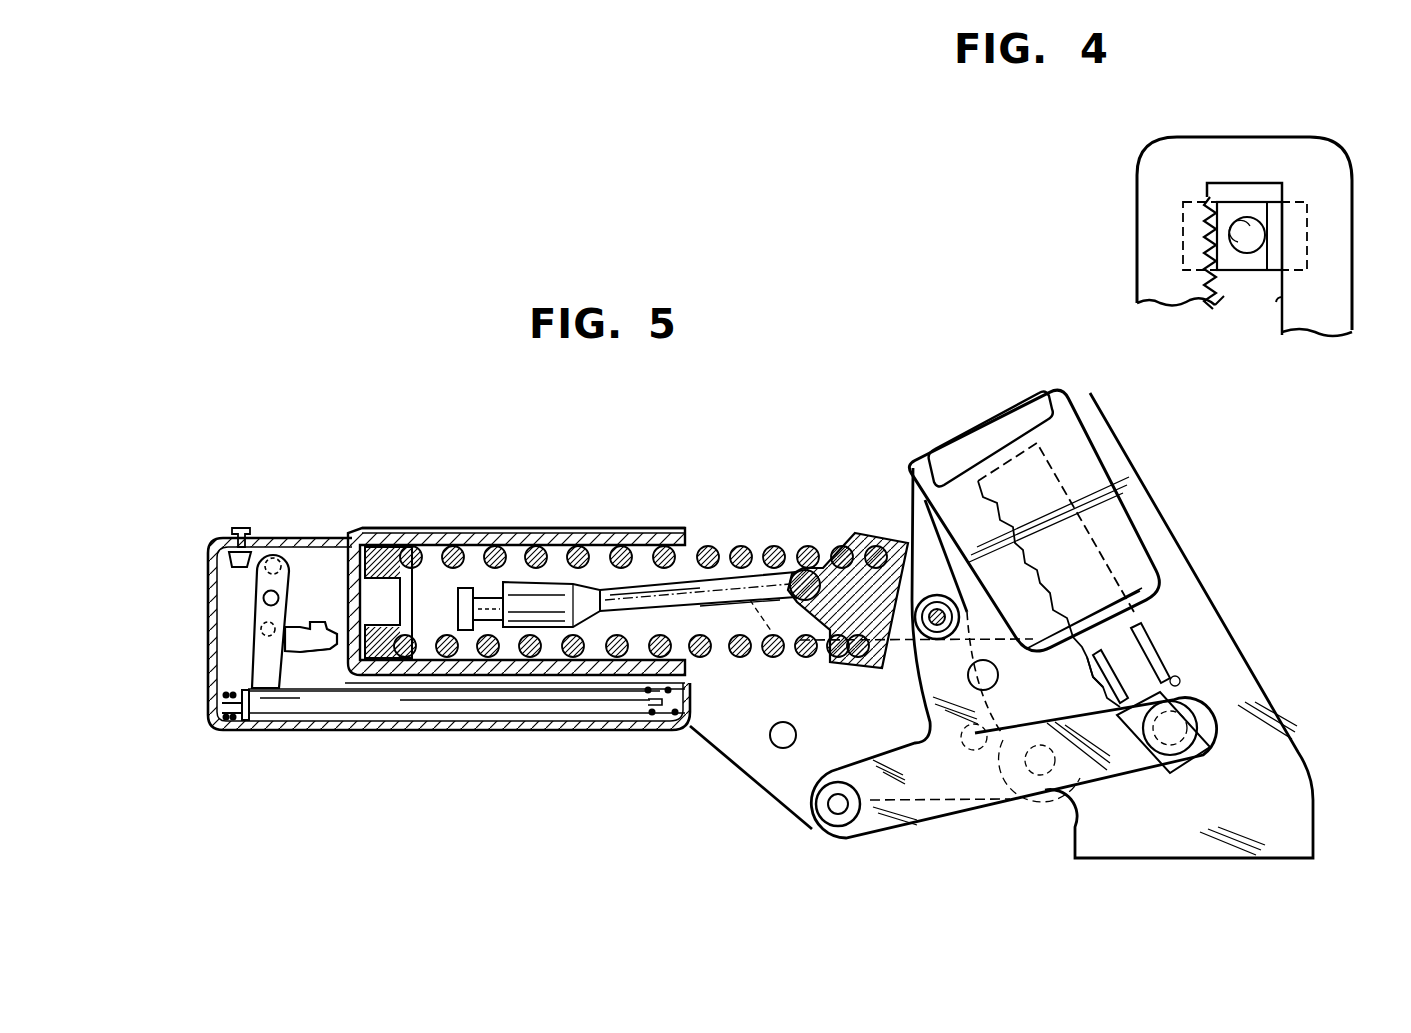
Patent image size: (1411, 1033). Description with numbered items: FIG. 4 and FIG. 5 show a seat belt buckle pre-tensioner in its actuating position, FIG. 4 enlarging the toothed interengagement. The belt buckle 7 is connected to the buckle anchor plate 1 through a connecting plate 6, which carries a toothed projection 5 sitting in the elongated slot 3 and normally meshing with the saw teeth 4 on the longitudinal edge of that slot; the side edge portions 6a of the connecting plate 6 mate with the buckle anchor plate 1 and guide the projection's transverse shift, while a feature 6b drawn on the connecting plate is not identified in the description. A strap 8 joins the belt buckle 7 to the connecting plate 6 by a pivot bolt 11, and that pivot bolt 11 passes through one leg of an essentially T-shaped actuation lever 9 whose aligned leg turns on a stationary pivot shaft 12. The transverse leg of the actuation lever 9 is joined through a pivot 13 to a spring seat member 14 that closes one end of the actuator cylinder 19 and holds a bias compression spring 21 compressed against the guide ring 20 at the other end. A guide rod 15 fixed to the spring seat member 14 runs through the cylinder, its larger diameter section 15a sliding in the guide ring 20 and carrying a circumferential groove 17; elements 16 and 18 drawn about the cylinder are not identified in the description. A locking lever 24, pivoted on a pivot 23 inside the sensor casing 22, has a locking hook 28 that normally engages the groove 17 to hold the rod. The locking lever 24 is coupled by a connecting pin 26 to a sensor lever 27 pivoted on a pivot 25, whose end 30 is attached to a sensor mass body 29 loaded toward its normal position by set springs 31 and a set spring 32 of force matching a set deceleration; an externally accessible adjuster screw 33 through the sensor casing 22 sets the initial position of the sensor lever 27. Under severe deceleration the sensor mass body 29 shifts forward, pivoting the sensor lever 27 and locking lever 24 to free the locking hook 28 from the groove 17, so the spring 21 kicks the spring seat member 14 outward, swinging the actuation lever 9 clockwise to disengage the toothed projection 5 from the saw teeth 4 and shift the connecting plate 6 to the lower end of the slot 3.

In FIG. 4, the buckle anchor plate 1 is at (1147, 238).
In FIG. 5, the buckle anchor plate 1 is at (1197, 637).
In FIG. 4, the elongated slot 3 is at (1347, 305).
In FIG. 5, the elongated slot 3 is at (1185, 683).
In FIG. 4, the saw teeth 4 is at (1220, 298).
In FIG. 5, the saw teeth 4 is at (1110, 567).
In FIG. 4, the toothed projection 5 is at (1208, 198).
In FIG. 4, the connecting plate 6 is at (1245, 268).
In FIG. 5, the connecting plate 6 is at (1034, 655).
In FIG. 4, the side edge portions 6a is at (1193, 247).
In FIG. 4, the hole 6b is at (1248, 228).
In FIG. 5, the belt buckle 7 is at (1100, 482).
In FIG. 5, the strap 8 is at (1130, 657).
In FIG. 5, the actuation lever 9 is at (962, 787).
In FIG. 5, the pivot bolt 11 is at (1173, 740).
In FIG. 5, the pivot shaft 12 is at (835, 807).
In FIG. 5, the pivot 13 is at (935, 620).
In FIG. 5, the spring seat member 14 is at (880, 545).
In FIG. 5, the guide rod 15 is at (707, 598).
In FIG. 5, the larger diameter section 15a is at (557, 582).
In FIG. 5, the spring seat 16 is at (812, 548).
In FIG. 5, the circumferential groove 17 is at (493, 607).
In FIG. 5, the spring housing 18 is at (456, 527).
In FIG. 5, the actuator cylinder 19 is at (636, 536).
In FIG. 5, the guide ring 20 is at (400, 603).
In FIG. 5, the bias compression spring 21 is at (770, 548).
In FIG. 5, the sensor casing 22 is at (580, 728).
In FIG. 5, the pivot 23 is at (262, 632).
In FIG. 5, the locking lever 24 is at (303, 645).
In FIG. 5, the pivot 25 is at (264, 598).
In FIG. 5, the connecting pin 26 is at (273, 558).
In FIG. 5, the sensor lever 27 is at (287, 593).
In FIG. 5, the locking hook 28 is at (322, 626).
In FIG. 5, the sensor mass body 29 is at (408, 712).
In FIG. 5, the end 30 is at (268, 678).
In FIG. 5, the set springs 31 is at (224, 700).
In FIG. 5, the set spring 32 is at (258, 713).
In FIG. 5, the adjuster screw 33 is at (240, 528).